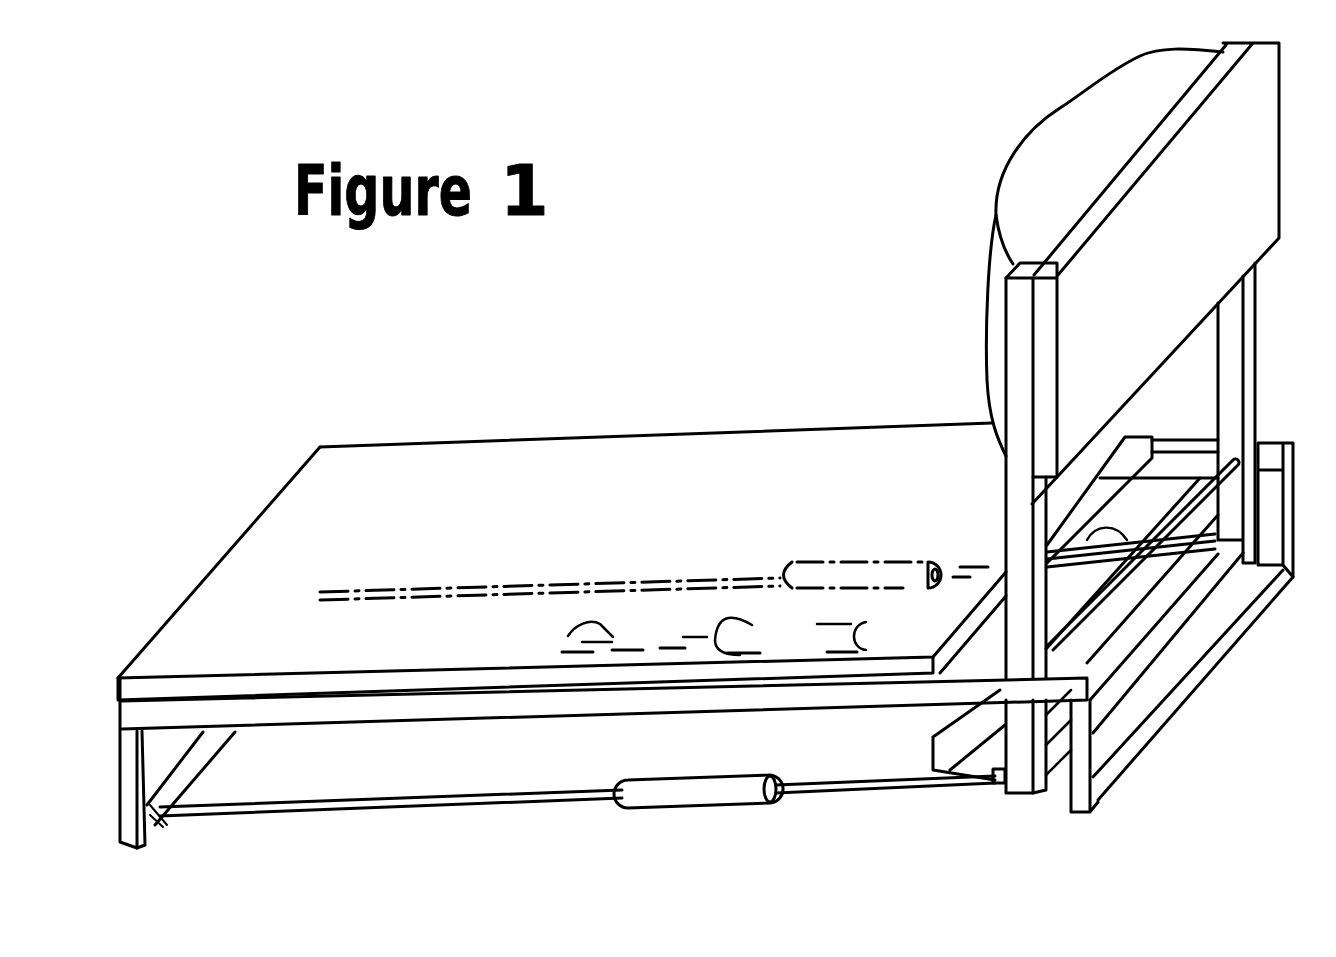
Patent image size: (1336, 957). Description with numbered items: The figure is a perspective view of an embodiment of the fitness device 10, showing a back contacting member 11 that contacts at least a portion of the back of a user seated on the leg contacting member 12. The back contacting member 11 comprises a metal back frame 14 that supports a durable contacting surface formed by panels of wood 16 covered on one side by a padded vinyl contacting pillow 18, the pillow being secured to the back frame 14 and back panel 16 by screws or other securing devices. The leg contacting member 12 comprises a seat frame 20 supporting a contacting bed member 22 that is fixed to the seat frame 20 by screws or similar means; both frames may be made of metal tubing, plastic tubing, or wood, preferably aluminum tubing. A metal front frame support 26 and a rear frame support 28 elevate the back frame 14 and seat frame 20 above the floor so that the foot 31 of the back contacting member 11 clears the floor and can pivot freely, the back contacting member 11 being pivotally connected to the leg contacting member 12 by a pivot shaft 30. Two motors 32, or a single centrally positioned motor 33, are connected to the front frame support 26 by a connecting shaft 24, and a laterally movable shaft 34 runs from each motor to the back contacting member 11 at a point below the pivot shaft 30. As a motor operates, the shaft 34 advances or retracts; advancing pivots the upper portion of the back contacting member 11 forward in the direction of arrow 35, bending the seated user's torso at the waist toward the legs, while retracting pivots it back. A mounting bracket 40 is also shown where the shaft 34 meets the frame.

The bed 10 is at (528, 379).
The back contacting member 11 is at (1253, 243).
The leg contacting member 12 is at (818, 447).
The back frame 14 is at (1015, 330).
The back panel 16 is at (1258, 184).
The contacting pillow 18 is at (1097, 127).
The seat frame 20 is at (440, 713).
The contacting bed member 22 is at (1152, 432).
The connecting shaft 24 is at (510, 802).
The front frame support 26 is at (125, 843).
The rear frame support 28 is at (1078, 815).
The pivot shaft 30 is at (1177, 512).
The foot 31 is at (993, 785).
The motor 32 is at (733, 797).
The motor 33 is at (697, 580).
The laterally movable shaft 34 is at (825, 793).
The arrow 35 is at (864, 292).
The mounting bracket 40 is at (943, 753).